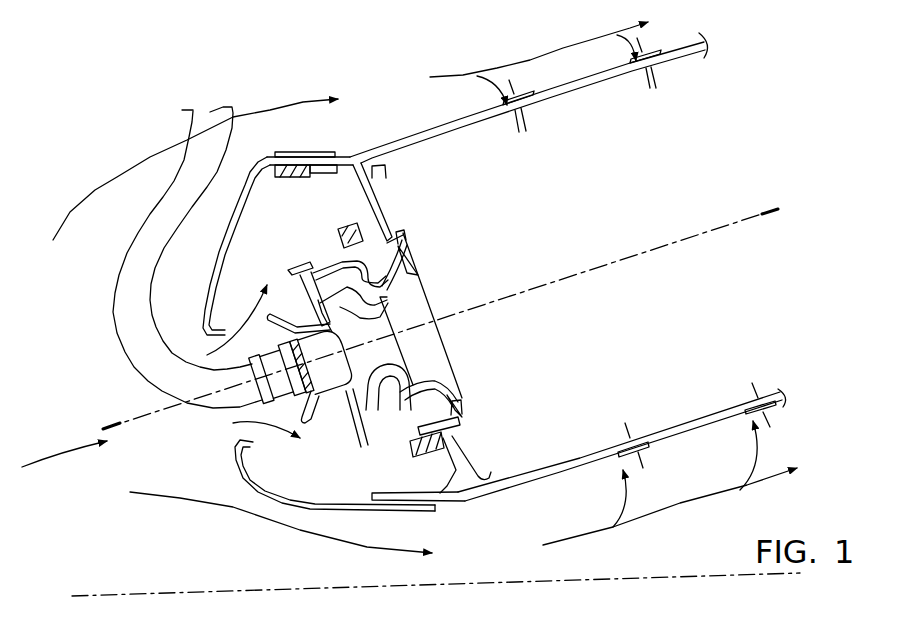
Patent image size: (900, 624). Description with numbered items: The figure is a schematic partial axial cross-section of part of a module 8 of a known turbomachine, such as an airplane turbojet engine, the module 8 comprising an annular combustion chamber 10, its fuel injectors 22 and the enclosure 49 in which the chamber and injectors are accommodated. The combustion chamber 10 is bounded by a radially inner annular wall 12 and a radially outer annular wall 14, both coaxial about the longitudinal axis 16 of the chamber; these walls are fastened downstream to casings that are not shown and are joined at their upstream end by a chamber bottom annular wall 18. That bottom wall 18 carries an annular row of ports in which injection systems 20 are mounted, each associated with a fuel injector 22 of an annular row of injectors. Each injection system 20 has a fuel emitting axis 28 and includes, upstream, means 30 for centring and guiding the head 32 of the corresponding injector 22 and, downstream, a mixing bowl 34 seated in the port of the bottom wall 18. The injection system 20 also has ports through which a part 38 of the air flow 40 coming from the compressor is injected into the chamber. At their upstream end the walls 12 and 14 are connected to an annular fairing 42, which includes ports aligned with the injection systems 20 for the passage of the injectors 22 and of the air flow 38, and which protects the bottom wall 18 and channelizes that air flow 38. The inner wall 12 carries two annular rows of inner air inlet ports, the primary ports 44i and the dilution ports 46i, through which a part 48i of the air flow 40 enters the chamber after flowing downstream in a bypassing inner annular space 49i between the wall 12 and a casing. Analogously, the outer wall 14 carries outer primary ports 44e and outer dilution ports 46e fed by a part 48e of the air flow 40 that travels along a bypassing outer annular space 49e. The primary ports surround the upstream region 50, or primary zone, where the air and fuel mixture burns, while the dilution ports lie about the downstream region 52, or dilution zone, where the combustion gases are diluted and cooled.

The module 8 is at (86, 141).
The annular combustion chamber 10 is at (394, 103).
The radially inner annular wall 12 is at (480, 497).
The radially outer annular wall 14 is at (357, 155).
The longitudinal axis 16 is at (122, 596).
The chamber bottom annular wall 18 is at (357, 197).
The injection system 20 is at (291, 263).
The fuel injector 22 is at (140, 229).
The fuel emitting axis 28 is at (567, 278).
The centring and guiding means 30 is at (300, 330).
The injector head 32 is at (301, 361).
The mixing bowl 34 is at (405, 272).
The air flow part 38 is at (247, 312).
The air flow 40 is at (62, 457).
The annular fairing 42 is at (213, 273).
The outer primary port 44e is at (522, 133).
The outer dilution port 46e is at (650, 90).
The inner primary port 44i is at (639, 468).
The inner dilution port 46i is at (766, 428).
The outer air flow part 48e is at (282, 105).
The inner air flow part 48i is at (222, 505).
The enclosure 49 is at (81, 368).
The bypassing outer annular space 49e is at (530, 72).
The bypassing inner annular space 49i is at (663, 474).
The upstream region 50 is at (555, 243).
The dilution zone region 52 is at (687, 203).